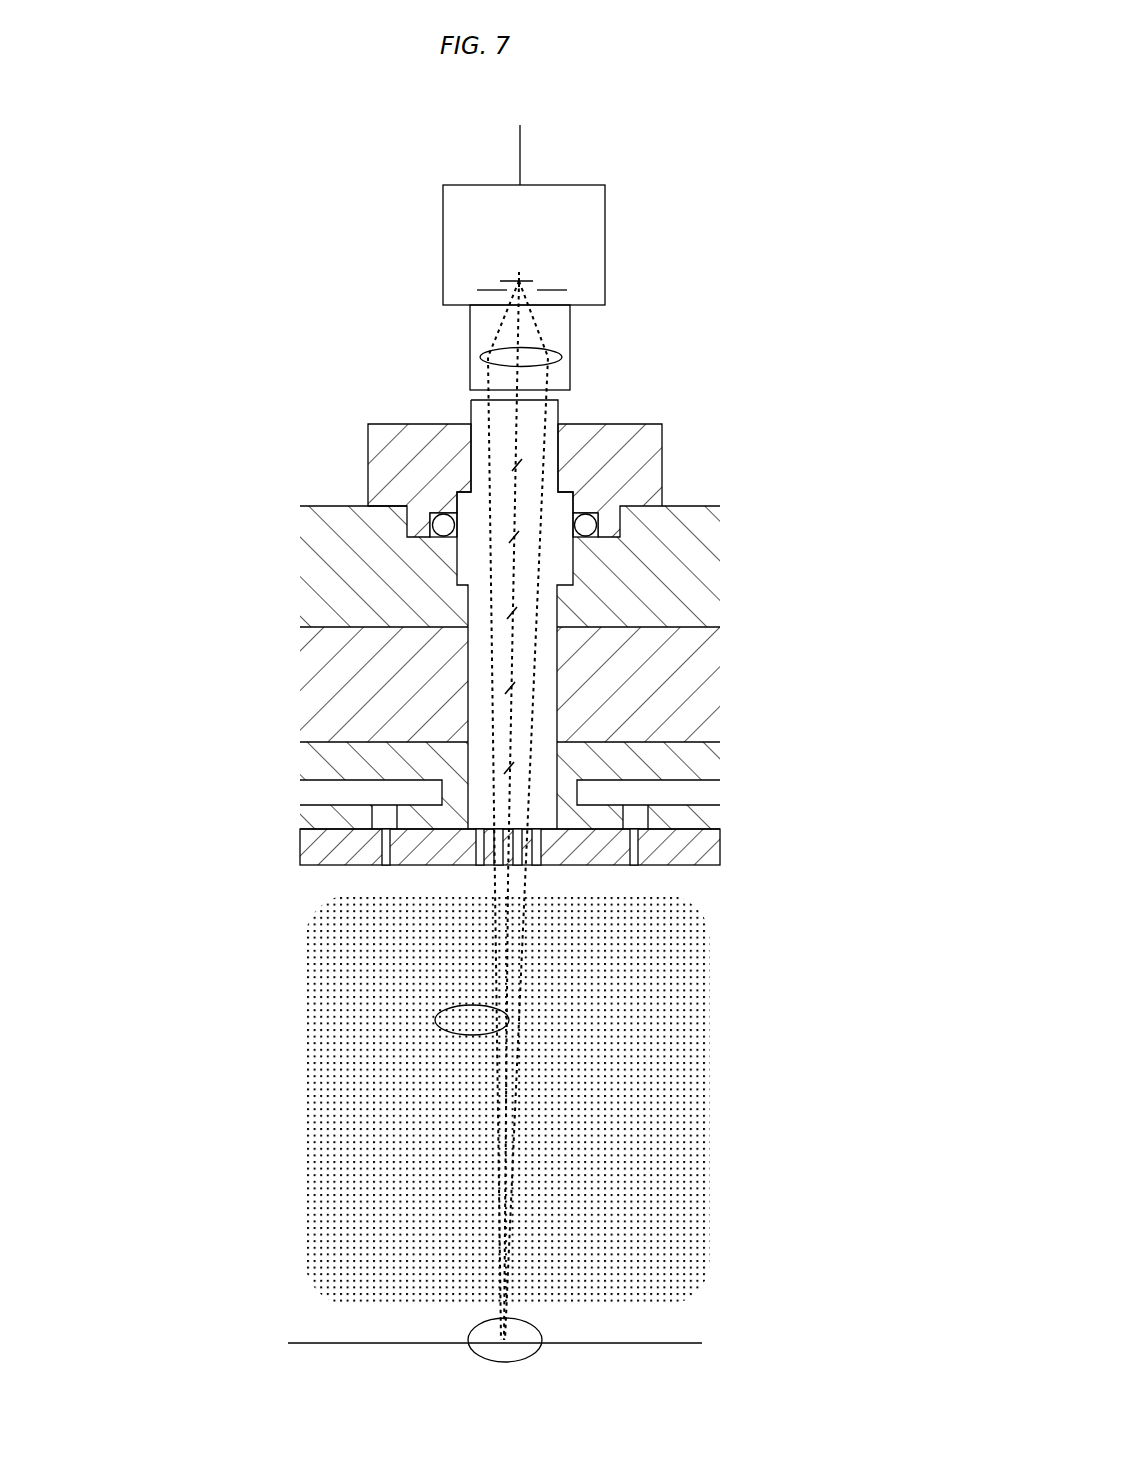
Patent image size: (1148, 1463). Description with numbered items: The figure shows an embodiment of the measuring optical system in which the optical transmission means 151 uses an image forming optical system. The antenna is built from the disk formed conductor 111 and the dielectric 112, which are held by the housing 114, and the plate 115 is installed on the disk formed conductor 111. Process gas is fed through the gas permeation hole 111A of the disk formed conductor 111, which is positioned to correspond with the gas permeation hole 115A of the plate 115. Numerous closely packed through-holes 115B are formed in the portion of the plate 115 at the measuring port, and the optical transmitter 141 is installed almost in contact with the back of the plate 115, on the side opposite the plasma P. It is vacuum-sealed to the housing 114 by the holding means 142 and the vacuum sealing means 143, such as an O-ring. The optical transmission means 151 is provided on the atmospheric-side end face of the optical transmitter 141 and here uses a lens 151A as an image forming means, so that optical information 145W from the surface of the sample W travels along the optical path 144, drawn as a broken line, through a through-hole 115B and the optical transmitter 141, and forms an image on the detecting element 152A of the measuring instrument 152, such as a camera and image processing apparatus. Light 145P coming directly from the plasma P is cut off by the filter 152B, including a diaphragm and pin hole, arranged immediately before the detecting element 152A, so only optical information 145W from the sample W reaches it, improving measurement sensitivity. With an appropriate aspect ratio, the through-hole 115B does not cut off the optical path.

The measuring instrument 152 is at (582, 258).
The detecting element 152A is at (515, 280).
The filter 152B is at (487, 288).
The optical transmission means 151 is at (562, 373).
The lens 151A is at (500, 355).
The holding means 142 is at (582, 440).
The vacuum sealing means 143 is at (633, 488).
The optical transmitter 141 is at (510, 650).
The housing 114 is at (337, 560).
The dielectric 112 is at (342, 648).
The disk formed conductor 111 is at (350, 733).
The gas permeation hole 111A is at (390, 817).
The plate 115 is at (310, 848).
The gas permeation hole 115A is at (387, 867).
The through-hole 115B is at (533, 877).
The plasma P is at (663, 1072).
The light directly coming from the plasma 145P is at (450, 1032).
The optical path 144 is at (510, 1212).
The sample W is at (303, 1340).
The optical information from the surface of the sample 145W is at (533, 1323).